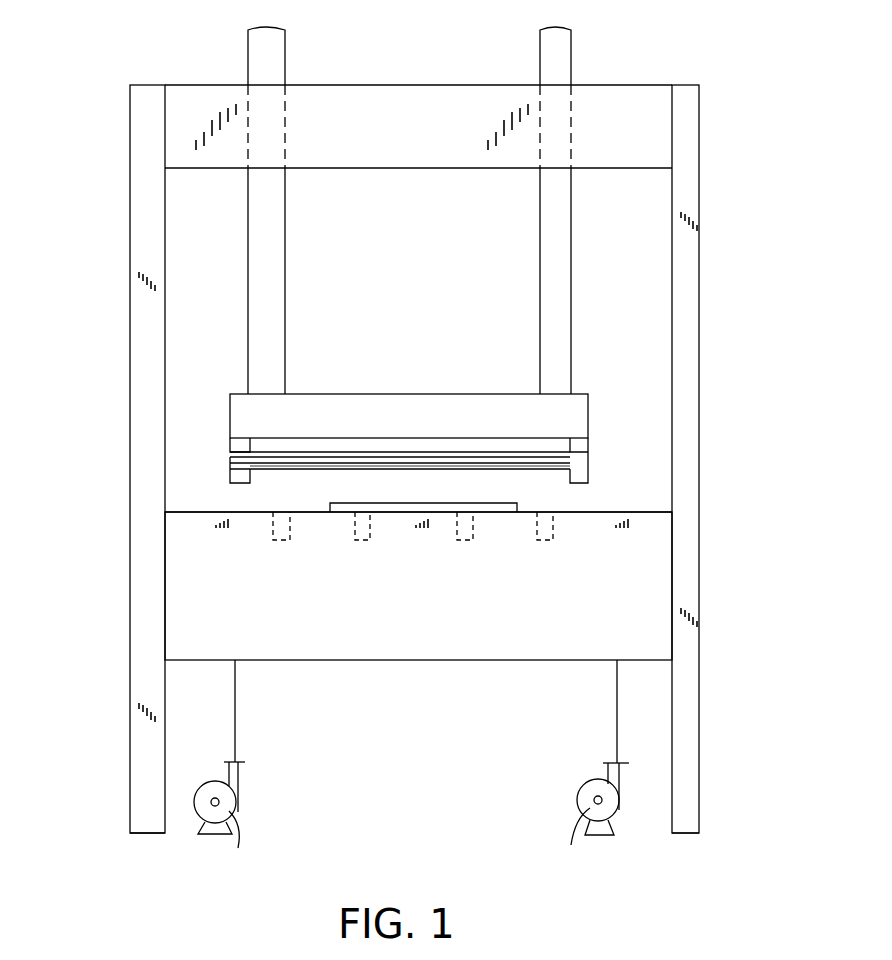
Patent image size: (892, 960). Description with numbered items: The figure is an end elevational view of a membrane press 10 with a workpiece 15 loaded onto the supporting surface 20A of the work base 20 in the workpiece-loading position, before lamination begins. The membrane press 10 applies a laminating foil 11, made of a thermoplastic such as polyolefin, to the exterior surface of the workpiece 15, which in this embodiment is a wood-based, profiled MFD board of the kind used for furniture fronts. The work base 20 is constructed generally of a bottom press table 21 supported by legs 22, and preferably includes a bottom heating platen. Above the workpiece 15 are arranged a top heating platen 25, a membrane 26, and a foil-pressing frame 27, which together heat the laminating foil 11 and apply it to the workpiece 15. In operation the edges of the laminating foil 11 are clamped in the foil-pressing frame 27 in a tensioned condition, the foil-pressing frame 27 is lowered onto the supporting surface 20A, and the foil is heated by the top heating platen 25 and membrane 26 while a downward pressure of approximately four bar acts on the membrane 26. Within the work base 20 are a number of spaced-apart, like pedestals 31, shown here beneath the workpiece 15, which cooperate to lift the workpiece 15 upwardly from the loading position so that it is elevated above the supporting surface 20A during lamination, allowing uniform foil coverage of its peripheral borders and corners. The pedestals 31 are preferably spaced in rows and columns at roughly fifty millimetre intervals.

The membrane press 10 is at (100, 99).
The laminating foil 11 is at (556, 475).
The workpiece 15 is at (395, 503).
The work base 20 is at (105, 527).
The supporting surface 20A is at (632, 512).
The bottom press table 21 is at (233, 621).
The legs 22 is at (148, 833).
The top heating platen 25 is at (550, 413).
The membrane 26 is at (327, 452).
The foil-pressing frame 27 is at (232, 468).
The pedestals 31 is at (362, 540).